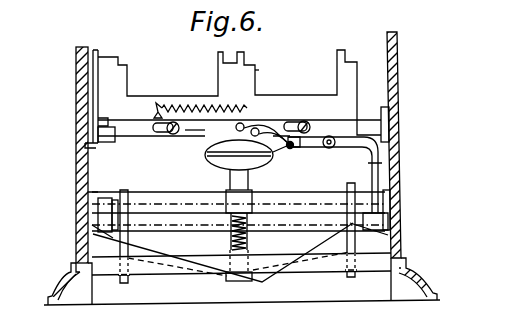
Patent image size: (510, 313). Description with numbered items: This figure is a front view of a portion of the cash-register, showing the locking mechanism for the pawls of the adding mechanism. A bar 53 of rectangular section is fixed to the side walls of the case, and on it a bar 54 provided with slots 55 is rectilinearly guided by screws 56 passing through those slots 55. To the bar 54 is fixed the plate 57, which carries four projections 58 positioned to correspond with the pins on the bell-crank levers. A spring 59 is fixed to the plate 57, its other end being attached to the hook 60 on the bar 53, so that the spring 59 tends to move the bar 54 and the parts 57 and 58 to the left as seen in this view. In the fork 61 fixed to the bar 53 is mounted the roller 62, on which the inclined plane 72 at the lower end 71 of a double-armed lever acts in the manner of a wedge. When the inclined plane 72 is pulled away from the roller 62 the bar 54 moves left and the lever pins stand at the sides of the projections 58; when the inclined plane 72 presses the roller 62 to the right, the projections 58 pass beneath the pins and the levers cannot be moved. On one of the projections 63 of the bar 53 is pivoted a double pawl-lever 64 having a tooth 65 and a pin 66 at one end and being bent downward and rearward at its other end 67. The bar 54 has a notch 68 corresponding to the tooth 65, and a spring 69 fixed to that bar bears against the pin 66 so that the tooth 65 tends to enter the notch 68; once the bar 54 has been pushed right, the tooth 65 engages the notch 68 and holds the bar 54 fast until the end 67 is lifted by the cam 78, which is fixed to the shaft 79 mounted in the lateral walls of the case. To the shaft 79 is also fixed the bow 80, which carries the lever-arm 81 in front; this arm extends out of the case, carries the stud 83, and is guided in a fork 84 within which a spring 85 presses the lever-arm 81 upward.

The bar 53 is at (364, 125).
The bar 54 is at (191, 132).
The slots 55 is at (161, 133).
The screws 56 is at (173, 134).
The plate 57 is at (255, 70).
The projections 58 is at (100, 58).
The spring 59 is at (186, 104).
The hook 60 is at (160, 103).
The fork 61 is at (104, 124).
The roller 62 is at (106, 143).
The projections 63 is at (329, 149).
The double pawl-lever 64 is at (313, 147).
The tooth 65 is at (288, 148).
The pin 66 is at (300, 147).
The end 67 is at (366, 158).
The notch 68 is at (268, 140).
The spring 69 is at (256, 137).
The lower end 71 is at (94, 52).
The inclined plane 72 is at (96, 150).
The cam 78 is at (383, 163).
The shaft 79 is at (374, 232).
The bow 80 is at (148, 197).
The lever-arm 81 is at (239, 191).
The stud 83 is at (222, 163).
The fork 84 is at (231, 237).
The spring 85 is at (249, 244).